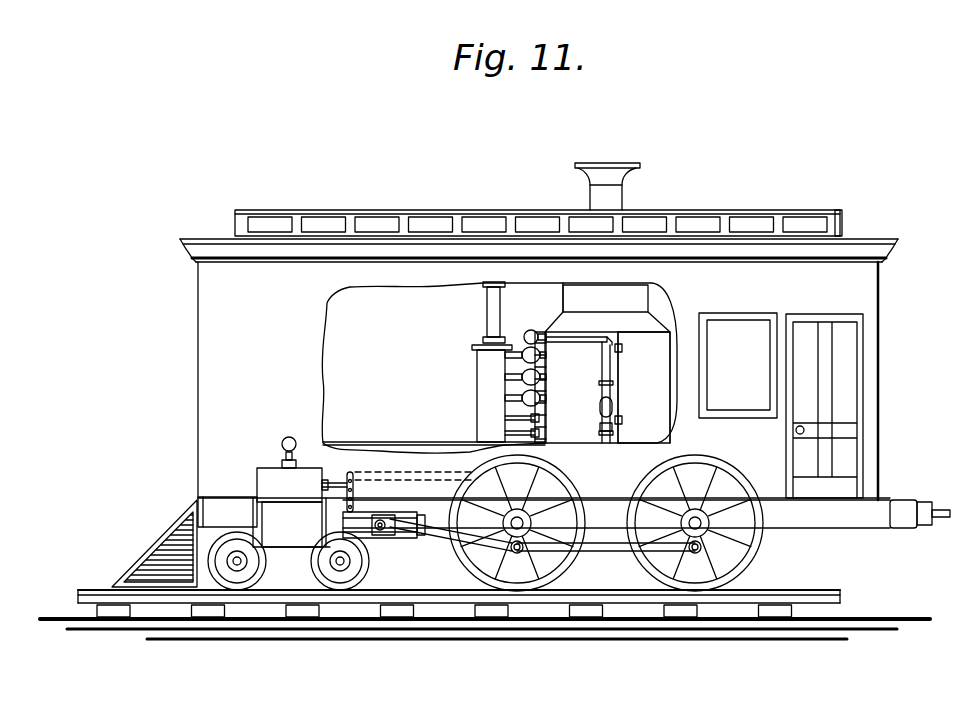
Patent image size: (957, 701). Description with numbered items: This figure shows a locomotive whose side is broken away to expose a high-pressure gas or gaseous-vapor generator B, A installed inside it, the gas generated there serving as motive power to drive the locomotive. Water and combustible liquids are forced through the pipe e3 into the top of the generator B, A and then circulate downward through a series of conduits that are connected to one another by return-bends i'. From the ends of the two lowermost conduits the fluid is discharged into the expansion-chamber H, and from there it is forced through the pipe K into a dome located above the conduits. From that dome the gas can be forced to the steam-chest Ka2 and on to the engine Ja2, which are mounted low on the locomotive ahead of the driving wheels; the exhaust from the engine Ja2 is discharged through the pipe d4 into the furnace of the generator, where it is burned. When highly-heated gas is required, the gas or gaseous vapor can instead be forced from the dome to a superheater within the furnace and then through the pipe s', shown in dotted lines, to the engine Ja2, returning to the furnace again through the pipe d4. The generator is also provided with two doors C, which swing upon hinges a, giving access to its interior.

The pipe K is at (517, 312).
The expansion-chamber H is at (492, 393).
The return-bends i' is at (525, 368).
The pipe s' is at (413, 446).
The high-pressure gas or gaseous-vapor generator B is at (607, 364).
The high-pressure gas or gaseous-vapor generator A is at (579, 390).
The pipe e3 is at (579, 390).
The hinges a is at (624, 387).
The doors C is at (644, 387).
The steam-chest Ka2 is at (289, 485).
The engine Ja2 is at (292, 524).
The pipe d4 is at (432, 485).